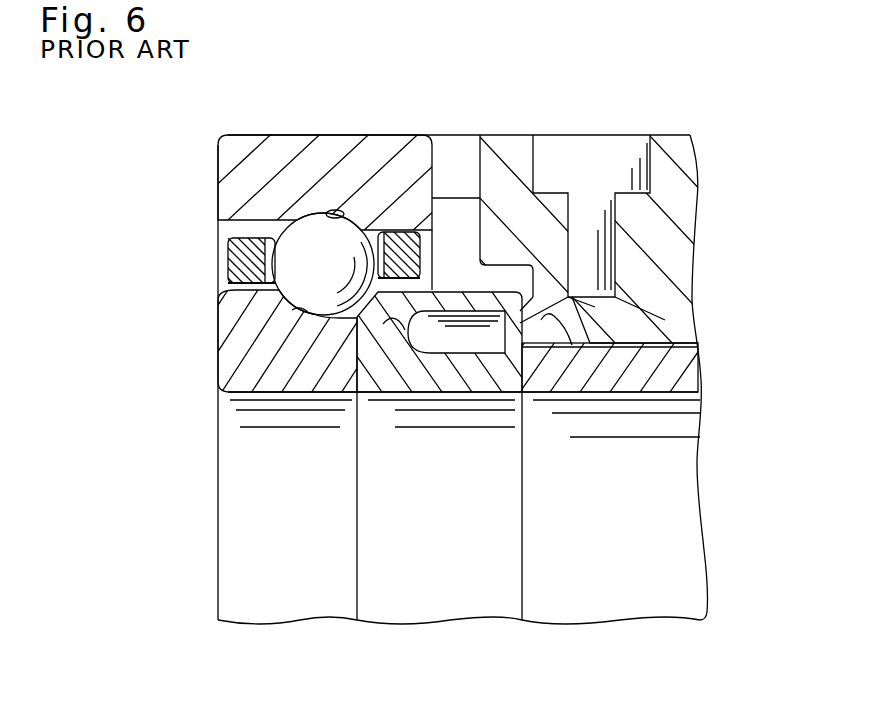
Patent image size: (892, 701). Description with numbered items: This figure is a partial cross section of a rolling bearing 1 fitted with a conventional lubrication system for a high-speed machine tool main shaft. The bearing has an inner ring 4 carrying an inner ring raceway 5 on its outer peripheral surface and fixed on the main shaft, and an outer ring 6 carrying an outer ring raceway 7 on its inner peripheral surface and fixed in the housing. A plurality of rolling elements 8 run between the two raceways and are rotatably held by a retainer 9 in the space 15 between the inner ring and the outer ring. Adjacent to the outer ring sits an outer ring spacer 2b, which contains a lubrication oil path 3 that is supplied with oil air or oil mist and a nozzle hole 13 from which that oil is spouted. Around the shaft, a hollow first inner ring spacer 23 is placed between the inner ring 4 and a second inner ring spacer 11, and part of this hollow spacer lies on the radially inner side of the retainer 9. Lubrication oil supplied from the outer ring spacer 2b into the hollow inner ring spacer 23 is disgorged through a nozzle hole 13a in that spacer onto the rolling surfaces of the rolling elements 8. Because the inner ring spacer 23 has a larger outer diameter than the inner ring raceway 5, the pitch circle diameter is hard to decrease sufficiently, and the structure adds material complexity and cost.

The rolling bearing 1 is at (240, 134).
The outer ring spacer 2b is at (667, 243).
The lubrication oil path 3 is at (613, 205).
The inner ring 4 is at (282, 377).
The inner ring raceway 5 is at (253, 365).
The outer ring 6 is at (287, 147).
The outer ring raceway 7 is at (345, 212).
The rolling elements 8 is at (245, 292).
The retainer 9 is at (283, 267).
The second inner ring spacer 11 is at (678, 368).
The nozzle hole 13 is at (550, 320).
The nozzle hole 13a is at (401, 328).
The space 15 is at (343, 328).
The hollow first inner ring spacer 23 is at (408, 325).